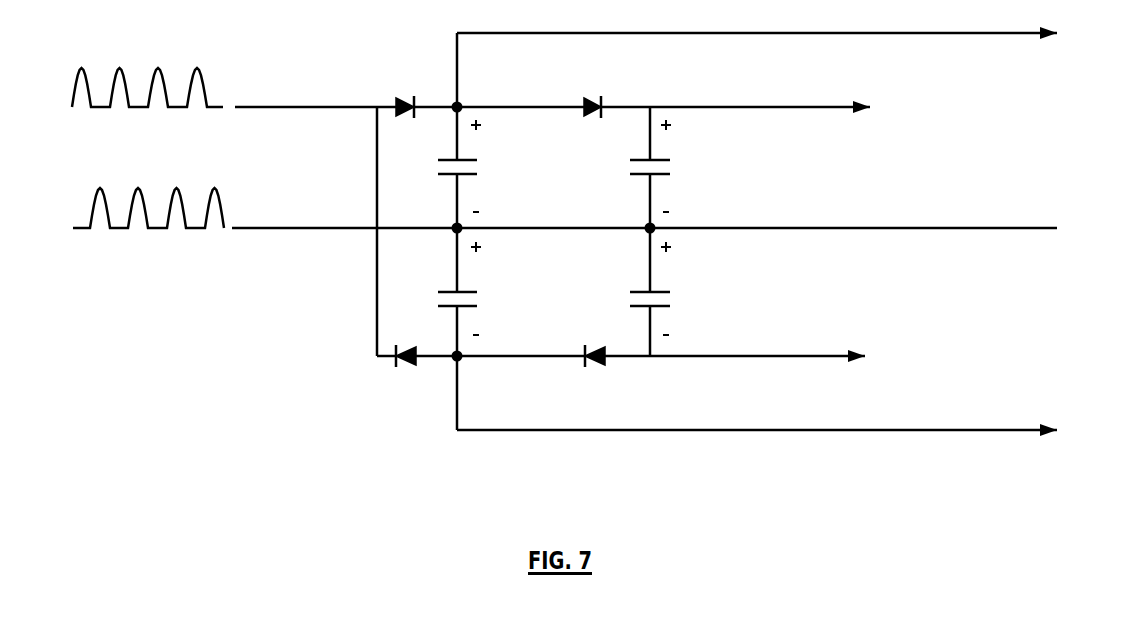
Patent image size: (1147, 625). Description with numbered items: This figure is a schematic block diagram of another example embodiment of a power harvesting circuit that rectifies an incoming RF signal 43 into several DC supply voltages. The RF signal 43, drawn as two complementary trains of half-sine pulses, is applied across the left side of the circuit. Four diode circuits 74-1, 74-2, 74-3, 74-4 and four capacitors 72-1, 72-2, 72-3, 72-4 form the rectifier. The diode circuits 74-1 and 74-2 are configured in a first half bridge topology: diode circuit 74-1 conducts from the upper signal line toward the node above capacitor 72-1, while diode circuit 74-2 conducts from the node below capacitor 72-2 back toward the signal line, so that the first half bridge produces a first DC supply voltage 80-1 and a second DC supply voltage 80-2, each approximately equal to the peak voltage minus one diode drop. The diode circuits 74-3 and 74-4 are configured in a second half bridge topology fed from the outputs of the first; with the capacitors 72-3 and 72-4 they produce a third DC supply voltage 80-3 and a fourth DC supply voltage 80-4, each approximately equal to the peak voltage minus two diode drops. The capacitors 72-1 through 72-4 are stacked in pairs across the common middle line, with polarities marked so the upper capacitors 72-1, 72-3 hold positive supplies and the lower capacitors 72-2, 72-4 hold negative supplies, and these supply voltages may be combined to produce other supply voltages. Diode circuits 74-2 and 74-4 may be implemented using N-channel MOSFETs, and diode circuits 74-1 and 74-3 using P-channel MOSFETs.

The RF signal 43 is at (190, 167).
The diode circuit 74-1 is at (423, 82).
The diode circuit 74-2 is at (423, 410).
The diode circuit 74-3 is at (612, 82).
The diode circuit 74-4 is at (612, 410).
The capacitor 72-1 is at (531, 180).
The capacitor 72-2 is at (531, 314).
The capacitor 72-3 is at (724, 179).
The capacitor 72-4 is at (724, 314).
The first DC supply voltage 80-1 is at (1122, 132).
The second DC supply voltage 80-2 is at (1125, 380).
The third DC supply voltage 80-3 is at (870, 197).
The fourth DC supply voltage 80-4 is at (860, 329).